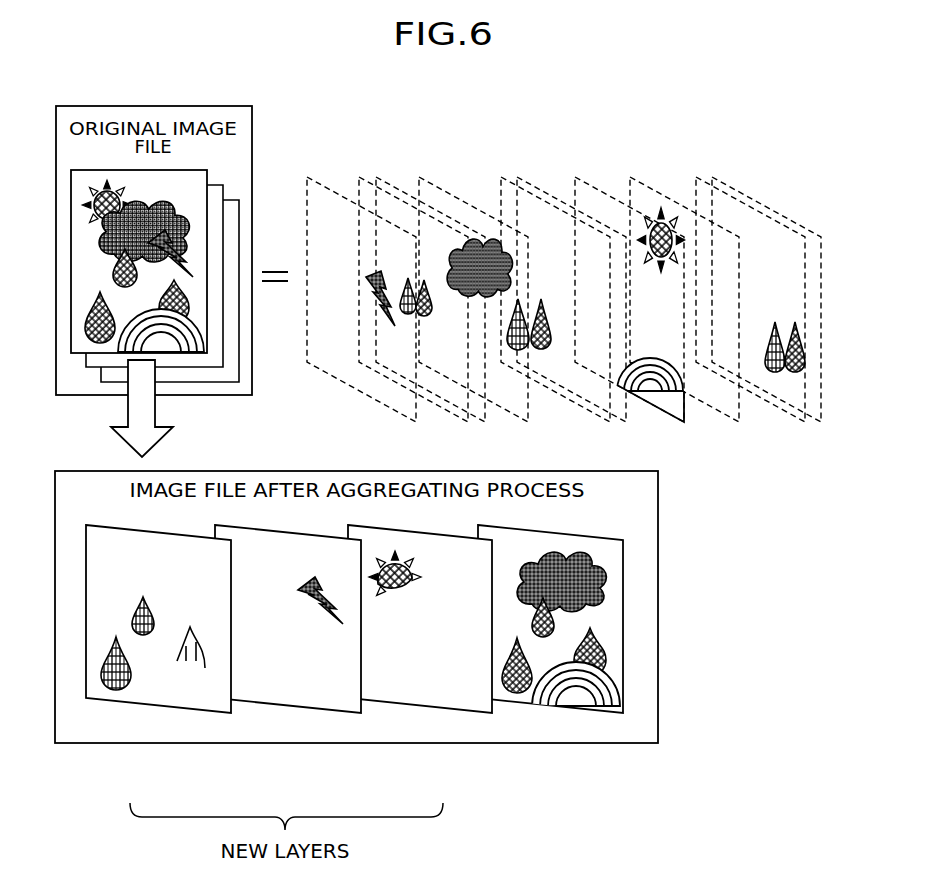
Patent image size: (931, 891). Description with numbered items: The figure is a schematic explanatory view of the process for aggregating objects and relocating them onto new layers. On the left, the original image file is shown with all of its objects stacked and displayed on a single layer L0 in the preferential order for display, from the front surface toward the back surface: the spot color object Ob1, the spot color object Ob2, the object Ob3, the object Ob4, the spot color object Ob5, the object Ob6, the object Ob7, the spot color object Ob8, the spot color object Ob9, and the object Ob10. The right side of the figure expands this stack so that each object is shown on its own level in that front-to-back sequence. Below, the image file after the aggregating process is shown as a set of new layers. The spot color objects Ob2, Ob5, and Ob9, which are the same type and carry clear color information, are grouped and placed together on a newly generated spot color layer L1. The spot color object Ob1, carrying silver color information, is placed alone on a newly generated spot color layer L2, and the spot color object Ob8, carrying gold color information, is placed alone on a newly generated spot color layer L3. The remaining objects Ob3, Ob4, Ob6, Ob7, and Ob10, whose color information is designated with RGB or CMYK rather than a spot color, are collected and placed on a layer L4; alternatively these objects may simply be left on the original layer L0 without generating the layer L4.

The layer L0 is at (83, 353).
The spot color object Ob1 is at (370, 273).
The spot color object Ob2 is at (407, 283).
The object Ob3 is at (430, 283).
The object Ob4 is at (513, 238).
The spot color object Ob5 is at (527, 310).
The object Ob6 is at (550, 323).
The object Ob7 is at (663, 413).
The spot color object Ob8 is at (667, 223).
The spot color object Ob9 is at (777, 373).
The object Ob10 is at (793, 373).
The spot color layer L1 is at (157, 707).
The spot color layer L2 is at (290, 706).
The spot color layer L3 is at (425, 706).
The layer L4 is at (560, 707).